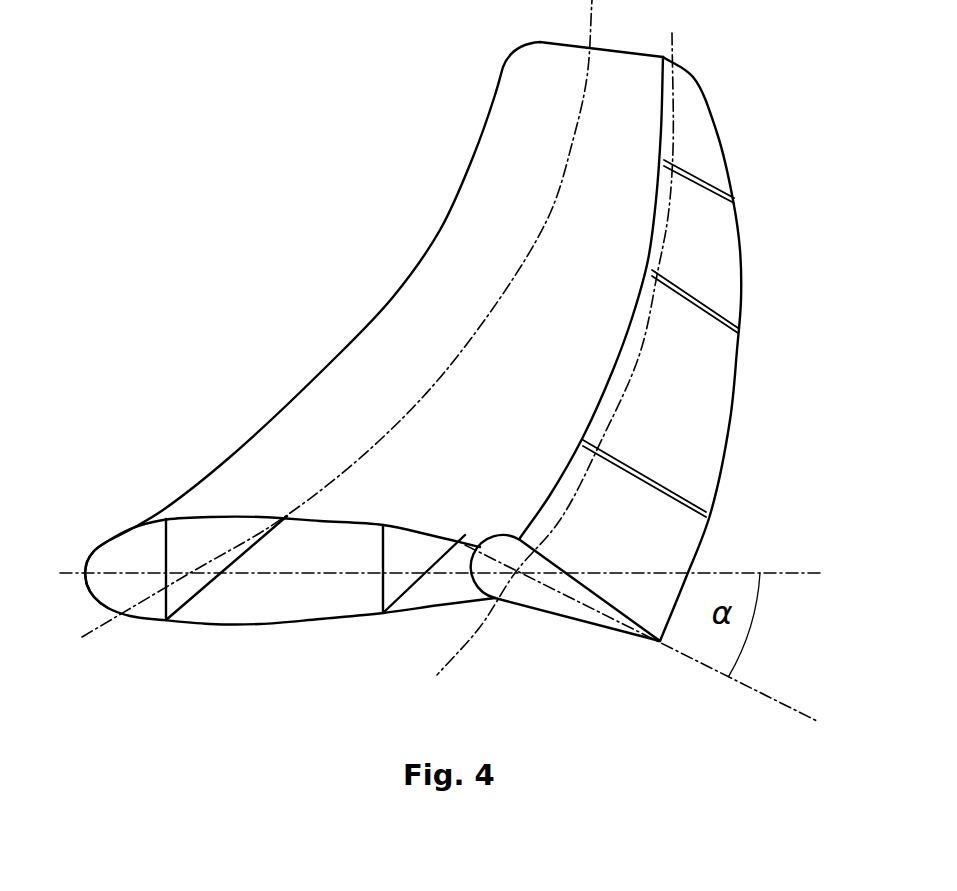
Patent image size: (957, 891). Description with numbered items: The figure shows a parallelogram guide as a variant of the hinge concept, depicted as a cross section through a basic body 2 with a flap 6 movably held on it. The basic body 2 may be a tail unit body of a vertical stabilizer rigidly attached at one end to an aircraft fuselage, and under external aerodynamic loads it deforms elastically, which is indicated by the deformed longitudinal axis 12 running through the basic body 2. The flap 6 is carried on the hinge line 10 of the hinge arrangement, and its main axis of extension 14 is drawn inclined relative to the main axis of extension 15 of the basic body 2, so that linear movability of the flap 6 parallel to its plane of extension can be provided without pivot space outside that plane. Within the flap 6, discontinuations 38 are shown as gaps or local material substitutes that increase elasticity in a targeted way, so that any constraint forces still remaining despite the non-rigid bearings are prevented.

The basic body 2 is at (378, 347).
The flap 6 is at (712, 377).
The hinge line 10 is at (448, 663).
The deformed longitudinal axis 12 is at (92, 632).
The main axis of extension of the flap 14 is at (790, 707).
The main axis of extension of the basic body 15 is at (75, 573).
The discontinuations 38 is at (714, 181).